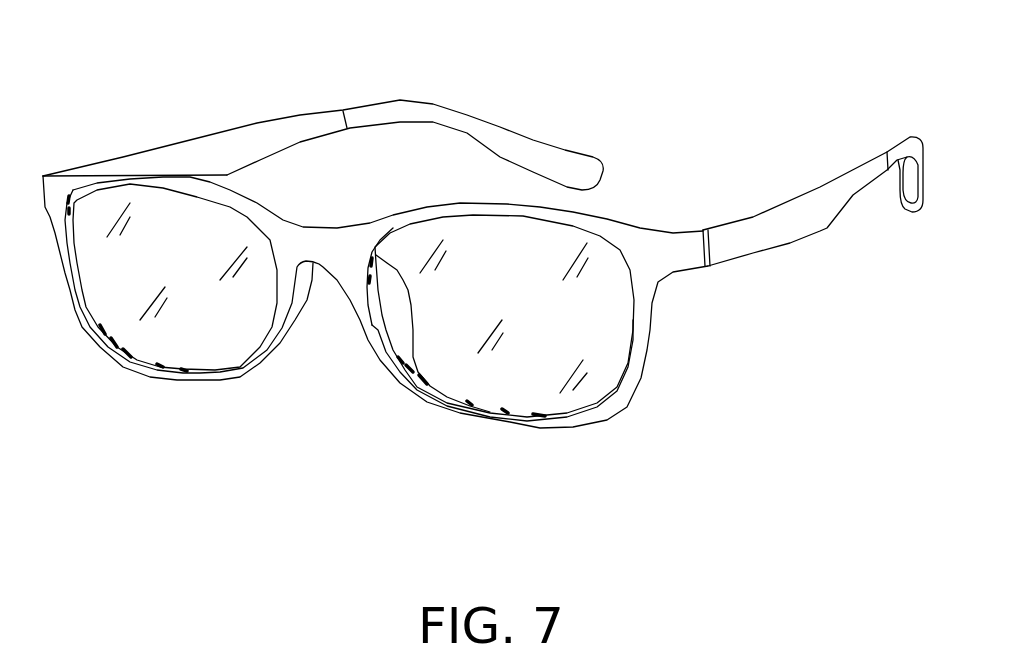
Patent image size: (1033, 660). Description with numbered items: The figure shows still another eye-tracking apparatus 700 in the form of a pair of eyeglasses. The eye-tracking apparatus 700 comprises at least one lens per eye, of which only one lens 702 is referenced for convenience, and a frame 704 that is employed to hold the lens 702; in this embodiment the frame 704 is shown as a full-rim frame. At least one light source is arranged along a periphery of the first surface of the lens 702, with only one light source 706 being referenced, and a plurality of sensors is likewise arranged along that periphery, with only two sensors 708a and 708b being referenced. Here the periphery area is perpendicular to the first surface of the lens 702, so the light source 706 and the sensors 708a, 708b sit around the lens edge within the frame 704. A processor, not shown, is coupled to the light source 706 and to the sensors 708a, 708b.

The eye-tracking apparatus 700 is at (647, 150).
The lens 702 is at (590, 345).
The frame 704 is at (763, 227).
The light source 706 is at (547, 418).
The sensor 708a is at (370, 272).
The sensor 708b is at (398, 362).